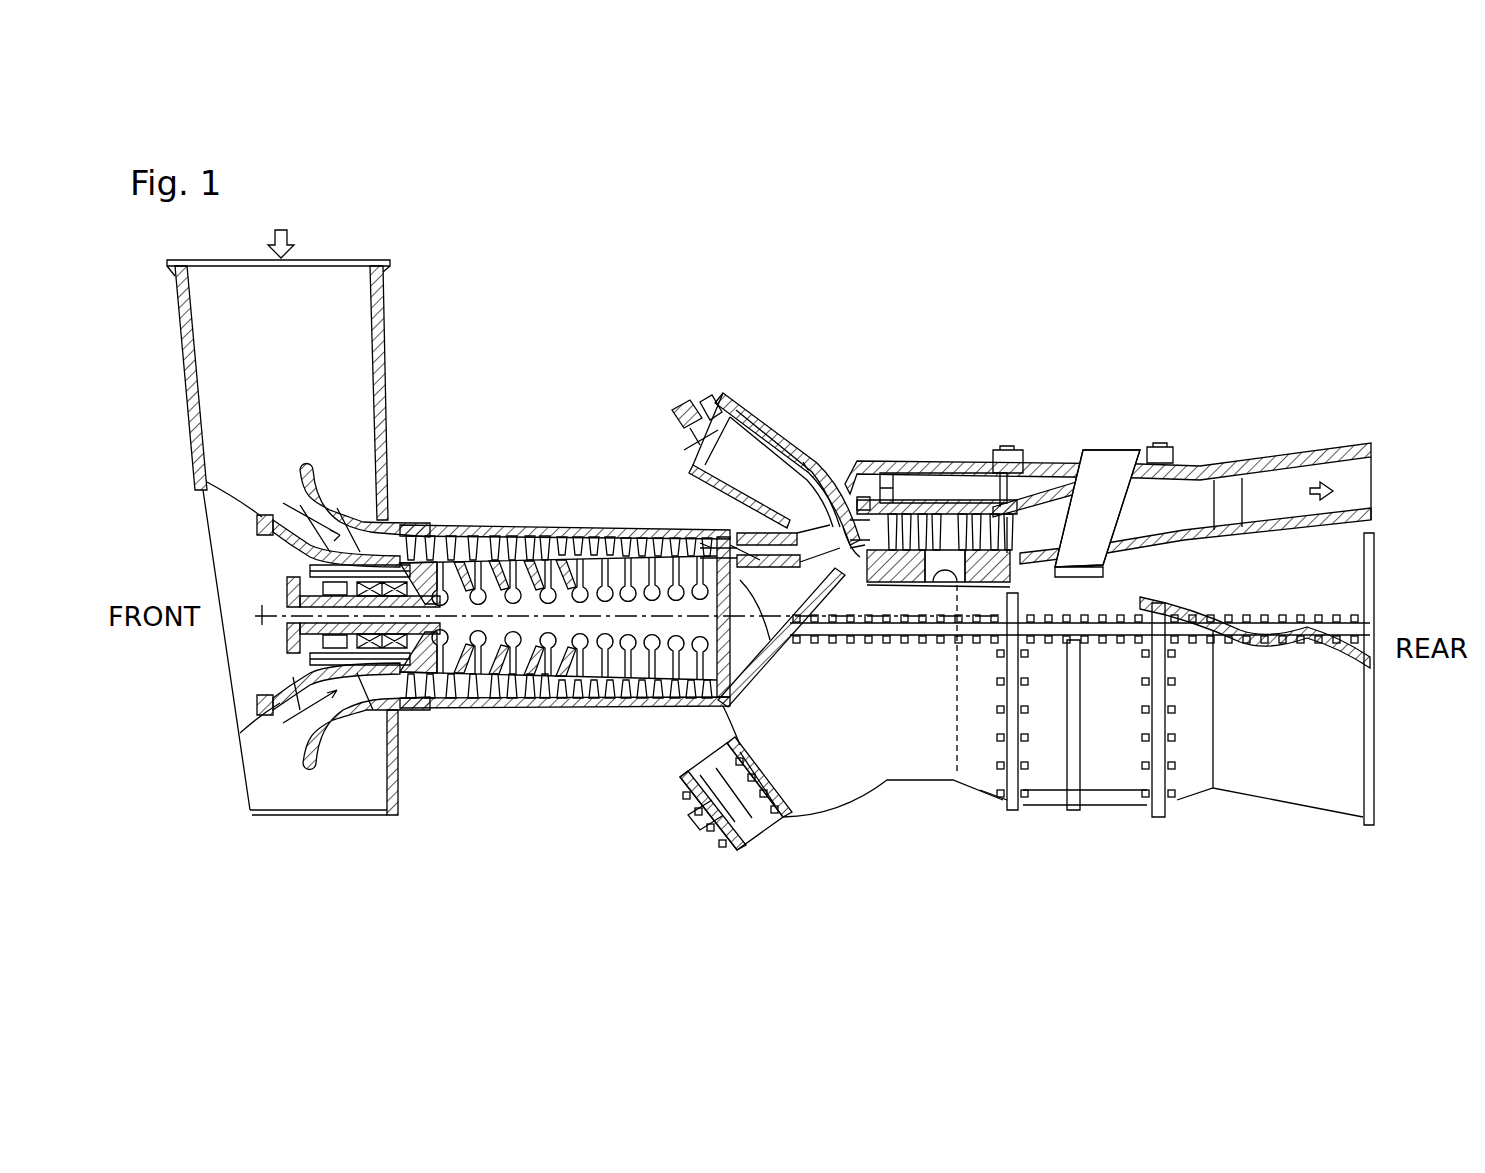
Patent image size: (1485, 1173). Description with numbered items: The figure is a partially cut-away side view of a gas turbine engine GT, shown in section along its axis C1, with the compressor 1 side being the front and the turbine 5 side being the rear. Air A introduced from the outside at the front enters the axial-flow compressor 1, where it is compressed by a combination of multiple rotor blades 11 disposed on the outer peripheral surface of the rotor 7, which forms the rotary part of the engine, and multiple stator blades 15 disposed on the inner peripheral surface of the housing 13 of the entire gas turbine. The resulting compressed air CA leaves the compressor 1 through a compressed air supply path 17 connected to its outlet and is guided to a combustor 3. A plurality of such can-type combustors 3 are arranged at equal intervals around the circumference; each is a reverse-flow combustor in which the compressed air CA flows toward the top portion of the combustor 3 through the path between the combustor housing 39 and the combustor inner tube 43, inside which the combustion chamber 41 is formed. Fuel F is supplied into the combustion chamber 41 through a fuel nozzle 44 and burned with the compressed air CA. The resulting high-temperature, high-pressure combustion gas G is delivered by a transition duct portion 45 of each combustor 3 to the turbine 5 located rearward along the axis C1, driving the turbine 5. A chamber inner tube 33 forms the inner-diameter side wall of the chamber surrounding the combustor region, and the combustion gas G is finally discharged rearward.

The compressor 1 is at (565, 619).
The combustor 3 is at (773, 585).
The turbine 5 is at (1108, 492).
The rotor 7 is at (747, 622).
The rotor blades 11 is at (438, 706).
The housing 13 is at (490, 533).
The stator blades 15 is at (440, 537).
The compressed air supply path 17 is at (747, 533).
The chamber inner tube 33 is at (812, 500).
The combustor housing 39 is at (775, 398).
The combustion chamber 41 is at (768, 476).
The combustor inner tube 43 is at (793, 440).
The fuel nozzle 44 is at (706, 408).
The transition duct portion 45 is at (862, 492).
The air A is at (288, 238).
The fuel F is at (660, 399).
The combustion gas G is at (852, 450).
The gas turbine engine GT is at (560, 371).
The compressed air CA is at (810, 452).
The axis C1 is at (268, 608).